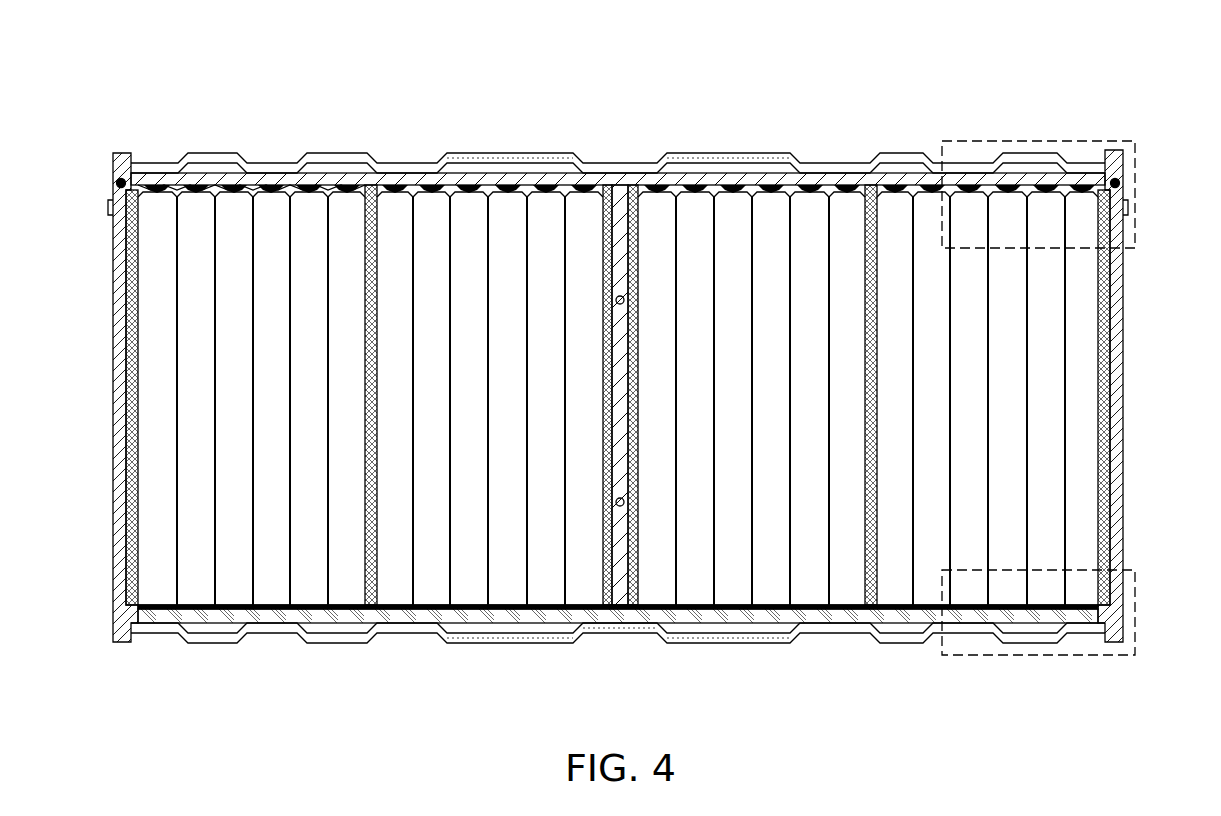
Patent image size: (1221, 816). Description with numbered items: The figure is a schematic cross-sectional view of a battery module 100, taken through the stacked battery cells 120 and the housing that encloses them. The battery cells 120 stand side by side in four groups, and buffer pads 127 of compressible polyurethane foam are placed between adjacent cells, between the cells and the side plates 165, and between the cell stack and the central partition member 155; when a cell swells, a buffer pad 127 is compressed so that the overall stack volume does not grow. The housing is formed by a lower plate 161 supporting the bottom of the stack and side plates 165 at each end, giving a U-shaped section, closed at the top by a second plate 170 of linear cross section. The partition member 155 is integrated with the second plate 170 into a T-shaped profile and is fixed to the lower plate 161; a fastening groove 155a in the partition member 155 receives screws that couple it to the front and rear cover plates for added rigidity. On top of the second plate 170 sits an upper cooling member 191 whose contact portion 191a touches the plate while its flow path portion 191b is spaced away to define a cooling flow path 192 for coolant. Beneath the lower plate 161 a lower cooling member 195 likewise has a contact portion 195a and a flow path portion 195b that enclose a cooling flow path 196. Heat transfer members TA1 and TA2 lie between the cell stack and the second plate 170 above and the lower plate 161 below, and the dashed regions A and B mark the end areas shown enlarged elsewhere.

The battery module 100 is at (162, 63).
The battery cell 120 is at (840, 215).
The buffer pad 127 is at (372, 235).
The partition member 155 is at (664, 399).
The fastening groove 155a is at (625, 504).
The lower plate 161 is at (820, 615).
The side plate 165 is at (120, 418).
The second plate 170 is at (618, 144).
The upper cooling member 191 is at (478, 165).
The contact portion 191a is at (600, 168).
The flow path portion 191b is at (760, 178).
The cooling flow path 192 is at (528, 178).
The lower cooling member 195 is at (478, 642).
The contact portion 195a is at (603, 633).
The flow path portion 195b is at (755, 642).
The cooling flow path 196 is at (545, 631).
The heat transfer member TA1 is at (962, 147).
The heat transfer member TA2 is at (966, 585).
The detail region A is at (1065, 141).
The detail region B is at (1065, 655).